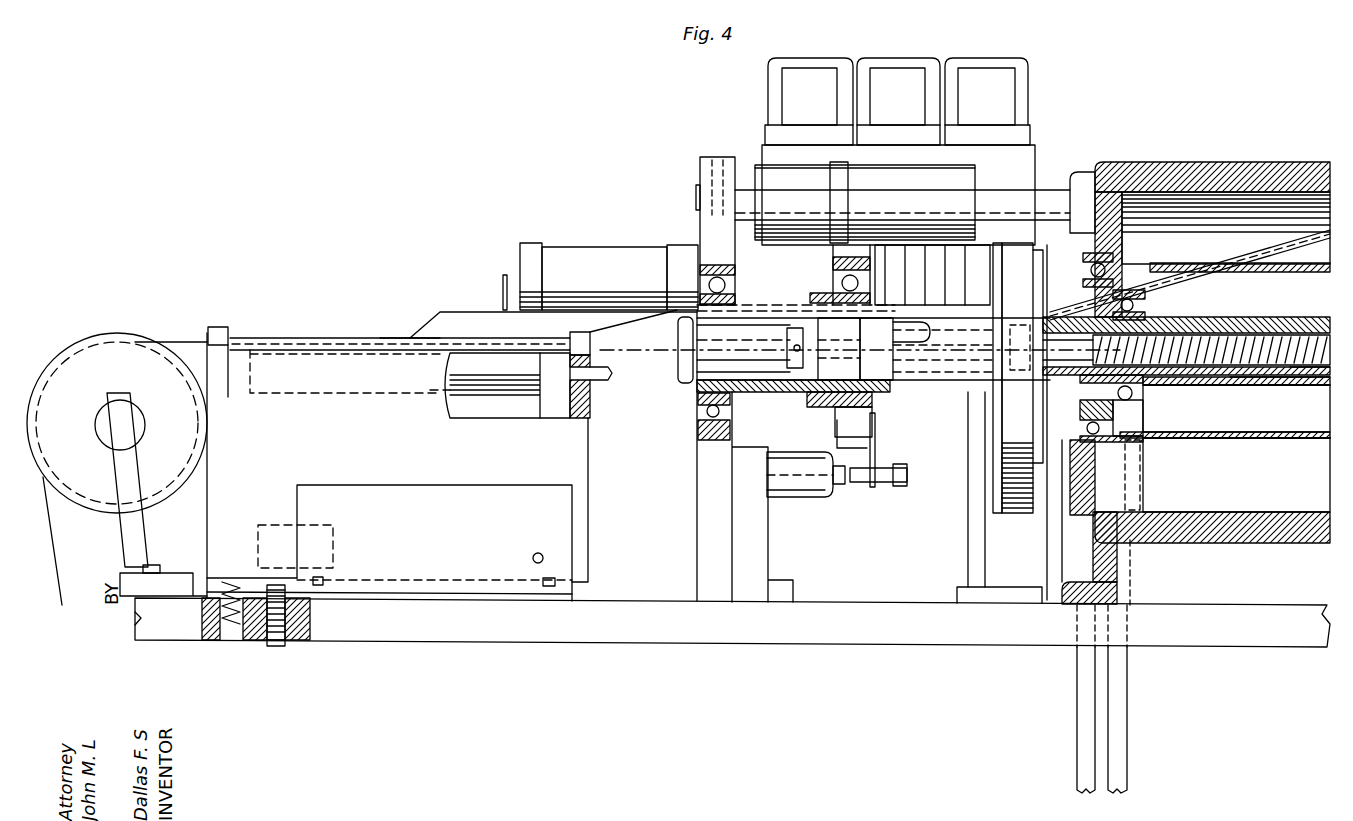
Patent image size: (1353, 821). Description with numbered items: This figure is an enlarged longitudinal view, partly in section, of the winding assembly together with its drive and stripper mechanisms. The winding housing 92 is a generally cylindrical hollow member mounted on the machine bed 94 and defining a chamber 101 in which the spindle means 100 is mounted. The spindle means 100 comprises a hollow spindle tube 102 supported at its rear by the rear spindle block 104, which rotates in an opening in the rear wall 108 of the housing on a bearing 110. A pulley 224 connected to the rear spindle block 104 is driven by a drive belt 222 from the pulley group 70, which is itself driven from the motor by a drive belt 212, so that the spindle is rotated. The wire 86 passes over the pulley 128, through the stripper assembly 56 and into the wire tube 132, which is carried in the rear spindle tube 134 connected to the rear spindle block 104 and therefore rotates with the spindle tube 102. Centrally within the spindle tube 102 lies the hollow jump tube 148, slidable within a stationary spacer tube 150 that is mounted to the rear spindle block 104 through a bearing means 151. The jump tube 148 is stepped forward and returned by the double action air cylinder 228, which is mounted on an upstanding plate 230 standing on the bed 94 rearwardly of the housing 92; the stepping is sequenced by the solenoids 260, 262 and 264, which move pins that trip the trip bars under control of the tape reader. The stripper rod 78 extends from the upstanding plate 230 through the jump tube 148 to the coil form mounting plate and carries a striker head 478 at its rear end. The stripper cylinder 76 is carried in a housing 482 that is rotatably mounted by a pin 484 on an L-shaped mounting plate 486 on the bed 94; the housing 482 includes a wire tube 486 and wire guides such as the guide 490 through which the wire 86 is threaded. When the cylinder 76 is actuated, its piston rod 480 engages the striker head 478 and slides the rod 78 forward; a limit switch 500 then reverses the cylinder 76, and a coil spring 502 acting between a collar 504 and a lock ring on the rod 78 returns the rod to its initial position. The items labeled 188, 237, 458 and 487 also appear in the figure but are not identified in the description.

The stripper assembly 56 is at (305, 335).
The pulley group 70 is at (1143, 487).
The stripper cylinder 76 is at (467, 392).
The stripper rod 78 is at (1262, 340).
The electrically conductive wire 86 is at (621, 325).
The winding housing 92 is at (1222, 165).
The machine bed 94 is at (298, 639).
The spindle means 100 is at (1196, 440).
The chamber 101 is at (1208, 513).
The spindle tube 102 is at (1253, 440).
The rear spindle block 104 is at (1150, 296).
The rear wall 108 is at (1090, 172).
The bearing 110 is at (1126, 262).
The pulley 128 is at (123, 331).
The wire tube 132 is at (780, 305).
The rear spindle tube 134 is at (932, 394).
The jump tube 148 is at (1230, 386).
The spacer tube 150 is at (1280, 388).
The bearing means 151 is at (1145, 403).
The block 188 is at (230, 336).
The drive belt 212 is at (1123, 728).
The drive belt 222 is at (1030, 514).
The pulley 224 is at (996, 514).
The jump cylinder 228 is at (633, 249).
The upstanding plate 230 is at (699, 164).
The solenoid 237 is at (790, 498).
The solenoid 260 is at (767, 83).
The solenoid 262 is at (902, 58).
The solenoid 264 is at (997, 58).
The spring 458 is at (229, 625).
The striker head 478 is at (685, 384).
The piston rod 480 is at (591, 380).
The housing 482 is at (592, 494).
The pin 484 is at (545, 557).
The L-shaped mounting plate 486 is at (339, 318).
The rod 487 is at (377, 341).
The wire guide 490 is at (569, 337).
The limit switch 500 is at (335, 529).
The coil spring 502 is at (1306, 386).
The collar 504 is at (1035, 368).